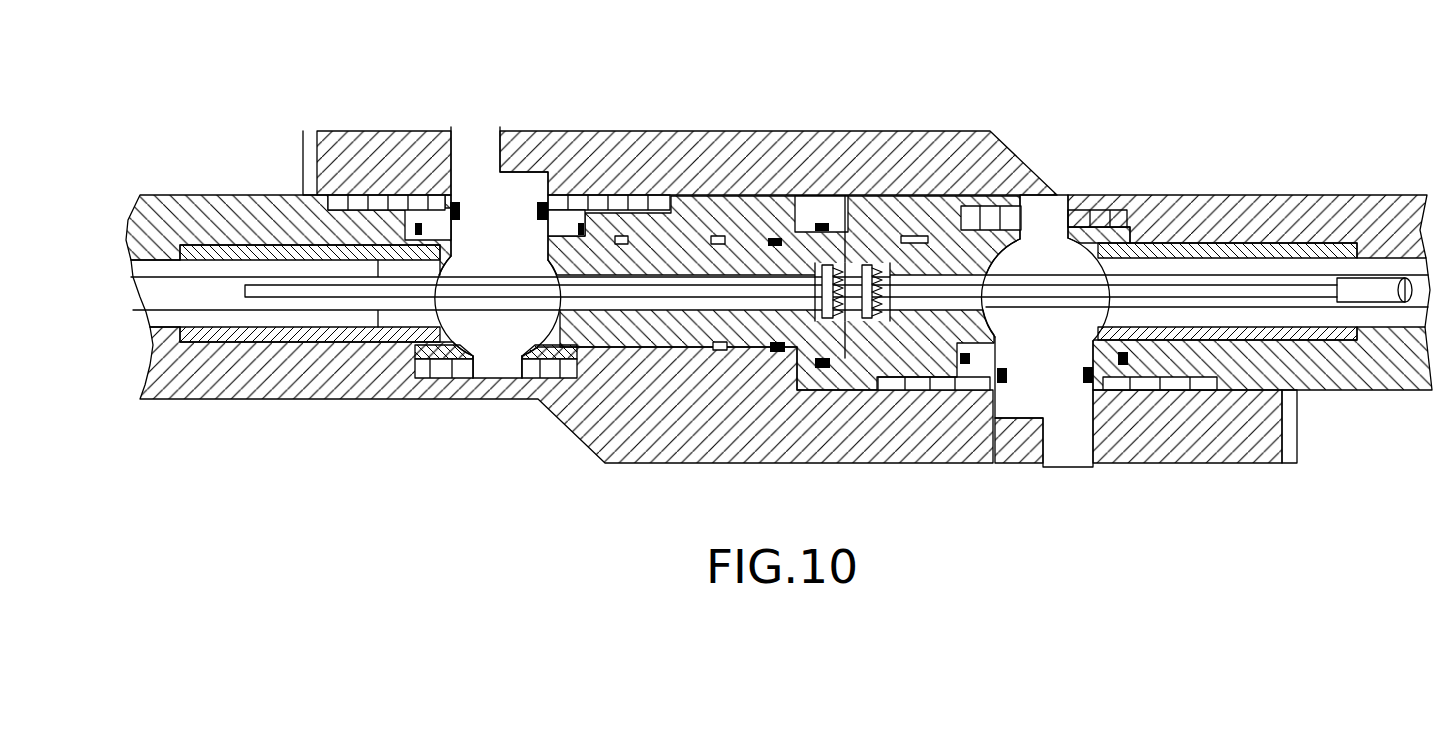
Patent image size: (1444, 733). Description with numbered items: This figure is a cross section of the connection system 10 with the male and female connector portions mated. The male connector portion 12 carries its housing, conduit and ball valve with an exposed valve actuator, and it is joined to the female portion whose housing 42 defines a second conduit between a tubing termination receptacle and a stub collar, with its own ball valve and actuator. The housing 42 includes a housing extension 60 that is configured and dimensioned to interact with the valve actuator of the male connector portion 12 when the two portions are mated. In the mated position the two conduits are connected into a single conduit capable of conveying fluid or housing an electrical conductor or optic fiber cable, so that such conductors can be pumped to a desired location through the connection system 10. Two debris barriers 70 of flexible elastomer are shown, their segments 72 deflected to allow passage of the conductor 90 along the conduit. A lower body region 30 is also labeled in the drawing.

The connection system 10 is at (1018, 120).
The male connector portion 12 is at (547, 422).
The lower housing block 30 is at (998, 438).
The housing 42 is at (1049, 168).
The housing extension 60 is at (606, 150).
The debris barrier 70 is at (832, 265).
The segments 72 is at (872, 265).
The conductor 90 is at (1142, 287).